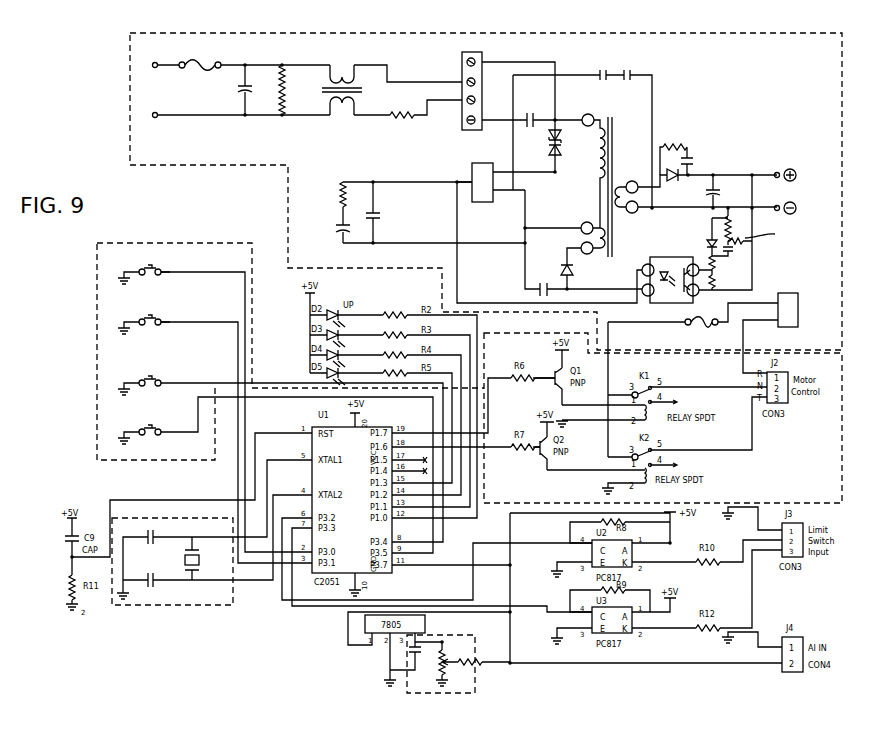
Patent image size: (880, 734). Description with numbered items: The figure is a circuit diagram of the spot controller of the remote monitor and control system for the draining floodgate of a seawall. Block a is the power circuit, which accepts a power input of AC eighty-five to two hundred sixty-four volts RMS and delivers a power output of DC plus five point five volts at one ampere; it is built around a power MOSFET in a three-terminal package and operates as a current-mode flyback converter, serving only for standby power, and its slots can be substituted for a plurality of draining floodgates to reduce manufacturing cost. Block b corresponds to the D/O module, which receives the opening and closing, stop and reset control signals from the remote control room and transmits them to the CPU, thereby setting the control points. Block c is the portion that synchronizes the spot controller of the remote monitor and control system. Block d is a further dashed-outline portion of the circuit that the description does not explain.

The power circuit a is at (130, 45).
The D/O module portion b is at (97, 257).
The synchronizing portion c is at (183, 606).
The voltage divider block d is at (475, 680).